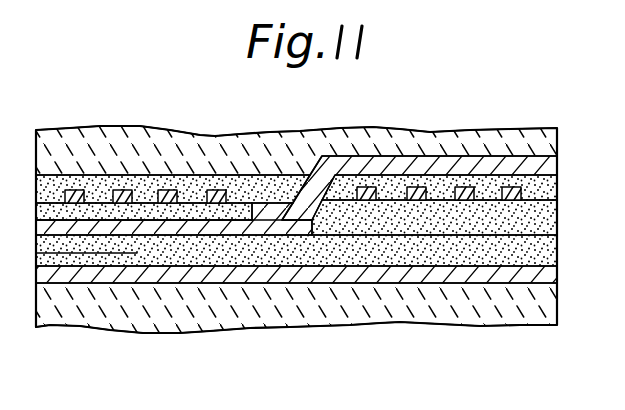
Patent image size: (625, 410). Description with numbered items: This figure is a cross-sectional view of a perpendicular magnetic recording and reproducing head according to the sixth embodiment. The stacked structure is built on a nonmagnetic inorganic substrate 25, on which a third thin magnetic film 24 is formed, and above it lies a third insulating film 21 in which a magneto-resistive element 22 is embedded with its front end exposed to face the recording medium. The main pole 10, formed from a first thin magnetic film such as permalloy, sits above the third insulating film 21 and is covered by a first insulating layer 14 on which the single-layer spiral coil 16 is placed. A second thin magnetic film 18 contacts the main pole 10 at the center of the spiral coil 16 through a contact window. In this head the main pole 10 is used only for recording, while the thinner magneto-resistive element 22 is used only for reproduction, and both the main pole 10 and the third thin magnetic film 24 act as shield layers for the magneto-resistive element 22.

The main pole 10 is at (183, 232).
The first insulating layer 14 is at (548, 224).
The spiral coil 16 is at (520, 192).
The second thin magnetic film 18 is at (550, 156).
The third insulating film 21 is at (348, 250).
The magneto-resistive element 22 is at (98, 253).
The third thin magnetic film 24 is at (248, 272).
The nonmagnetic inorganic substrate 25 is at (437, 315).